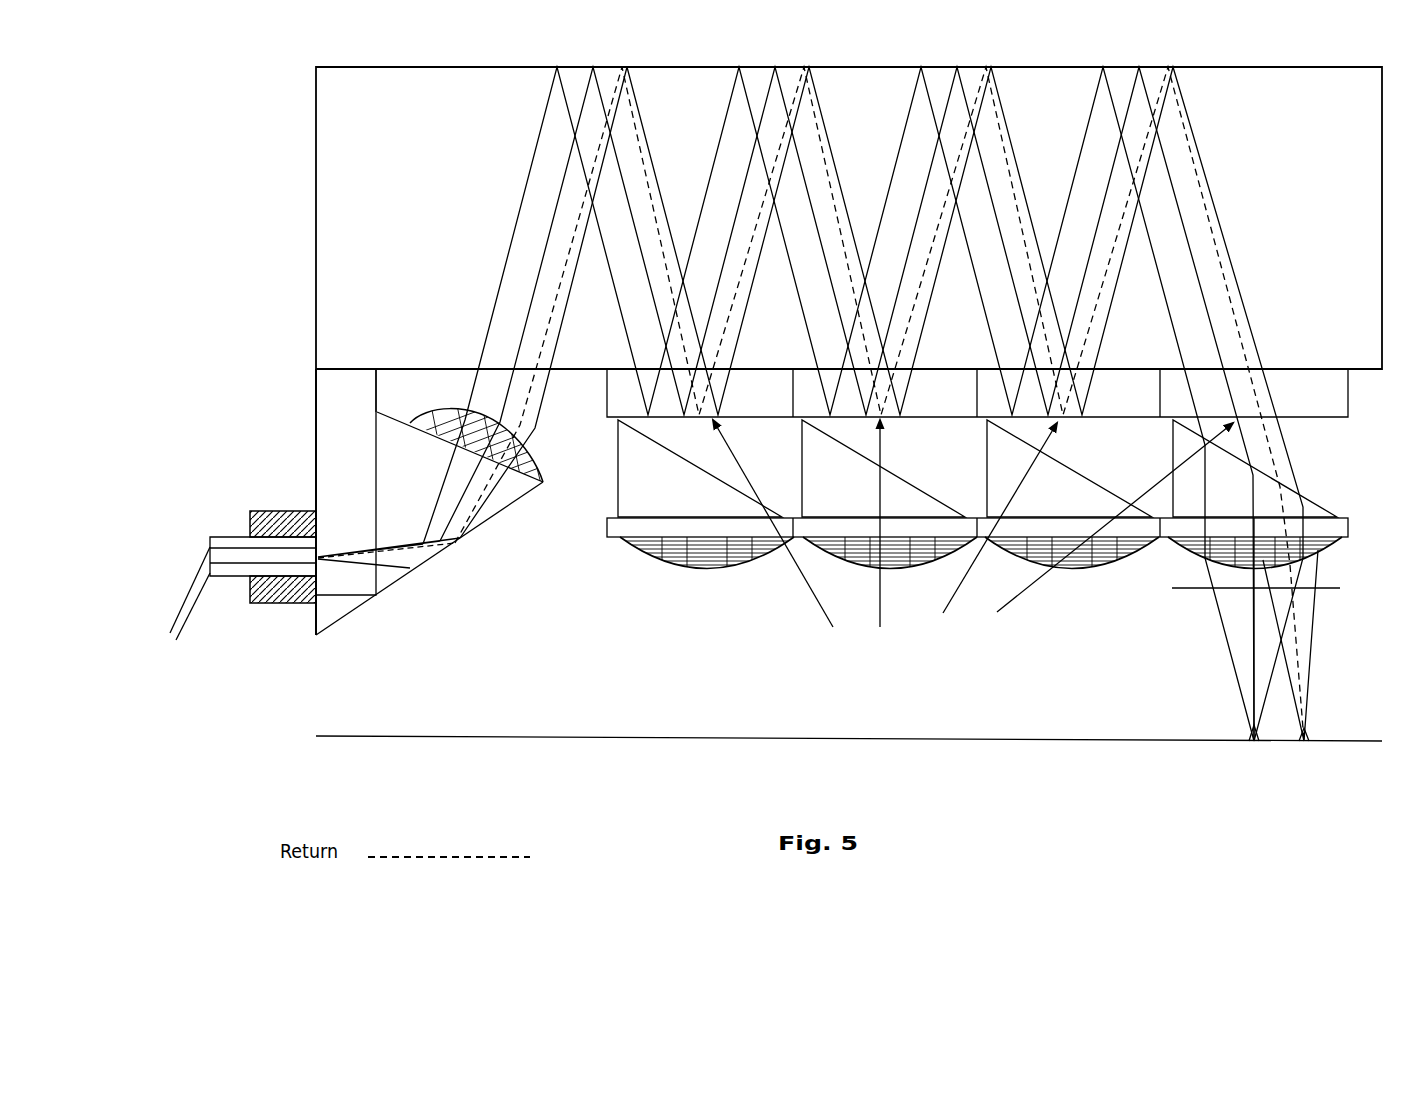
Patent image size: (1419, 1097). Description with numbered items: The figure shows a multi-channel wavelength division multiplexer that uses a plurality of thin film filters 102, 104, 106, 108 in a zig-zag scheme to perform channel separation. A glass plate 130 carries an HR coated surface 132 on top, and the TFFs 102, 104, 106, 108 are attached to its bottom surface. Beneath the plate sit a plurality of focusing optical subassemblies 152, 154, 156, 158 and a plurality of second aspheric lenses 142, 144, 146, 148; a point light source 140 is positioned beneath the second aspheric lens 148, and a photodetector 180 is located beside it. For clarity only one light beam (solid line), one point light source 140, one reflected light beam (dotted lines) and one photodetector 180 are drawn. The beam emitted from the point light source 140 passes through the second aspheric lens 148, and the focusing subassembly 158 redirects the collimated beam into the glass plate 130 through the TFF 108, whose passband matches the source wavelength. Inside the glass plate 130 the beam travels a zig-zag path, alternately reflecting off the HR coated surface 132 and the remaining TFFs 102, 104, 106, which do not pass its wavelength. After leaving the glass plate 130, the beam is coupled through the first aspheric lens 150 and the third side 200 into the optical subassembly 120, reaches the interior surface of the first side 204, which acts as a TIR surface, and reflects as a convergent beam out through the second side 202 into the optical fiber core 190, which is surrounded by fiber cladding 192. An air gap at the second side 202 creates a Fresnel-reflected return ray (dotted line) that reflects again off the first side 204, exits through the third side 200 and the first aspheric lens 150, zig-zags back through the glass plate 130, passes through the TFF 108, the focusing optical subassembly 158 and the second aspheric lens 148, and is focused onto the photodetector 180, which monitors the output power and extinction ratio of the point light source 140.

The glass plate 130 is at (340, 253).
The HR coated surface 132 is at (849, 44).
The second side 202 is at (316, 428).
The third side 200 is at (393, 415).
The first side 204 is at (393, 480).
The optical subassembly 120 is at (444, 456).
The first aspheric lens 150 is at (540, 485).
The fiber cladding 192 is at (220, 533).
The optical fiber core 190 is at (210, 555).
The focusing optical subassembly 152 is at (700, 468).
The focusing optical subassembly 154 is at (883, 468).
The focusing optical subassembly 156 is at (1069, 468).
The focusing optical subassembly 158 is at (1228, 497).
The second aspheric lens 142 is at (707, 573).
The second aspheric lens 144 is at (890, 573).
The second aspheric lens 146 is at (1075, 577).
The second aspheric lens 148 is at (1228, 563).
The thin film filter 102 is at (782, 534).
The thin film filter 104 is at (886, 534).
The thin film filter 106 is at (989, 535).
The thin film filter 108 is at (1104, 535).
The point light source 140 is at (1254, 743).
The photodetector 180 is at (1304, 743).